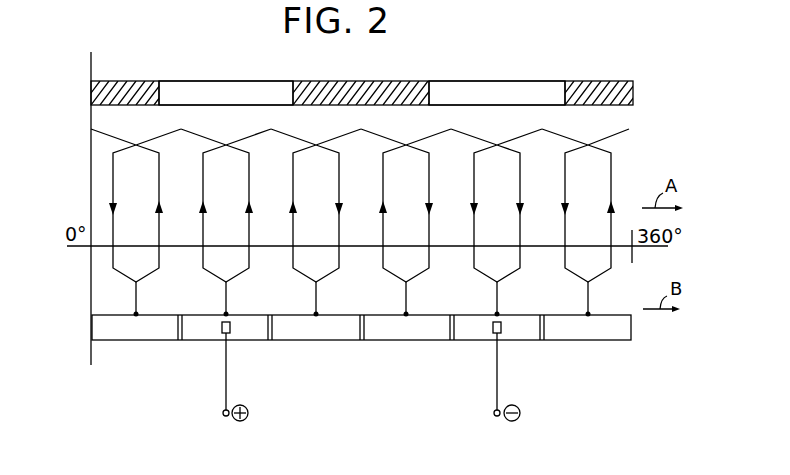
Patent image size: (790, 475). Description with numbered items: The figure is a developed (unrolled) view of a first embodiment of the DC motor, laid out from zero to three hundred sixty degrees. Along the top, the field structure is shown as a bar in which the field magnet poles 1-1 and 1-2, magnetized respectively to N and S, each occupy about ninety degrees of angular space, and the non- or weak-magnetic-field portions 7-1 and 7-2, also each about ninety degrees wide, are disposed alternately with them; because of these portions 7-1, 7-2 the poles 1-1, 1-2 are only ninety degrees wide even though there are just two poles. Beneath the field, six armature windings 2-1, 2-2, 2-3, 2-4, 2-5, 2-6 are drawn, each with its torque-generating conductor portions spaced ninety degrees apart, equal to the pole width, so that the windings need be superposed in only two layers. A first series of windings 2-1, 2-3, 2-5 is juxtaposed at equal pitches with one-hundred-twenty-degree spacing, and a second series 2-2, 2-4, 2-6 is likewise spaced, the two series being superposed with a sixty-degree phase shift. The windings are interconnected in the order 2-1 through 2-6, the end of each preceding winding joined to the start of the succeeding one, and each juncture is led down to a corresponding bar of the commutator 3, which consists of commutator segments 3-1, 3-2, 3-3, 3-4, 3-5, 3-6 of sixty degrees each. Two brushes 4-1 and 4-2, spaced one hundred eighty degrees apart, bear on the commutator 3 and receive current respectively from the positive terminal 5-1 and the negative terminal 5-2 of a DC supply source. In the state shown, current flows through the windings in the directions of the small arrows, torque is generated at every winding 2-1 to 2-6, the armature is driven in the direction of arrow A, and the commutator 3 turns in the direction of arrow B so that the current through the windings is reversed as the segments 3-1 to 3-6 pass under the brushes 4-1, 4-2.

The field magnet pole 1-1 is at (199, 81).
The field magnet pole 1-2 is at (482, 81).
The non- or weak-magnetic-field portion 7-1 is at (115, 81).
The non- or weak-magnetic-field portion 7-2 is at (346, 81).
The armature winding 2-1 is at (104, 134).
The armature winding 2-2 is at (197, 134).
The armature winding 2-3 is at (289, 134).
The armature winding 2-4 is at (382, 134).
The armature winding 2-5 is at (475, 134).
The armature winding 2-6 is at (558, 134).
The commutator 3 is at (632, 324).
The commutator segment 3-1 is at (131, 340).
The commutator segment 3-2 is at (200, 340).
The commutator segment 3-3 is at (292, 340).
The commutator segment 3-4 is at (380, 340).
The commutator segment 3-5 is at (469, 340).
The commutator segment 3-6 is at (561, 340).
The brush 4-1 is at (230, 330).
The brush 4-2 is at (501, 330).
The positive terminal 5-1 is at (220, 421).
The negative terminal 5-2 is at (491, 421).